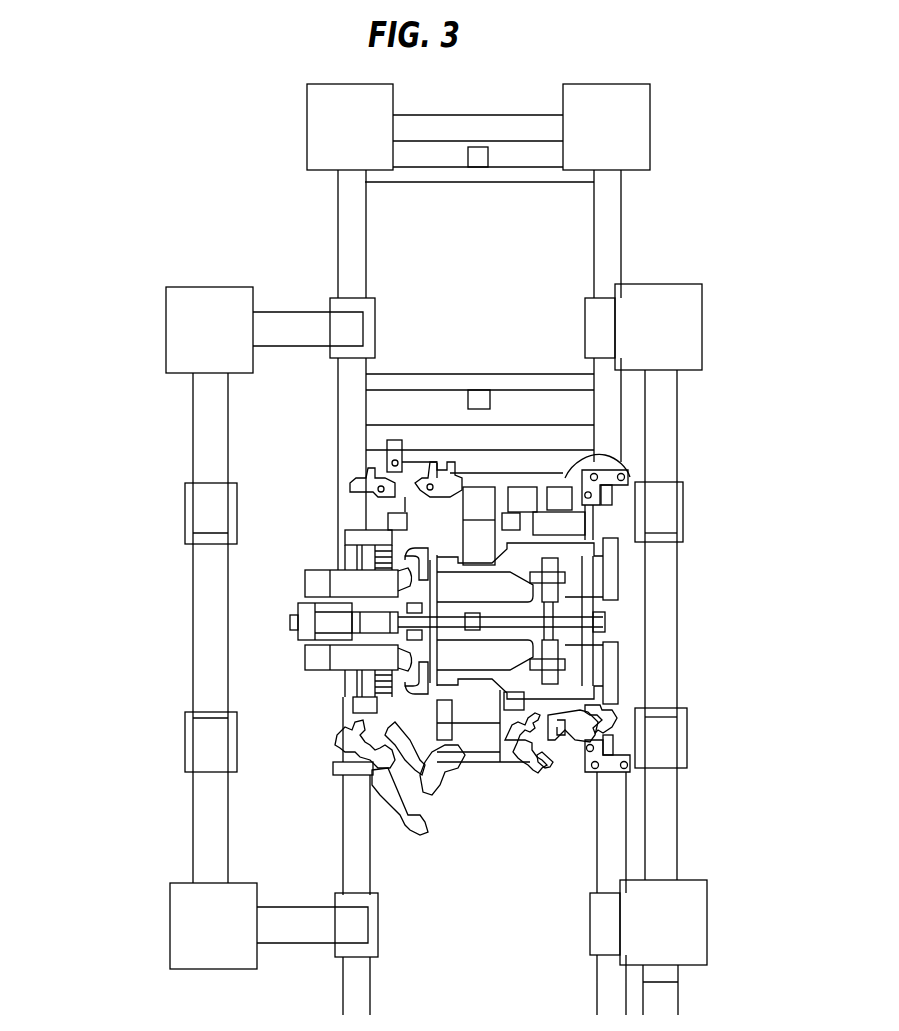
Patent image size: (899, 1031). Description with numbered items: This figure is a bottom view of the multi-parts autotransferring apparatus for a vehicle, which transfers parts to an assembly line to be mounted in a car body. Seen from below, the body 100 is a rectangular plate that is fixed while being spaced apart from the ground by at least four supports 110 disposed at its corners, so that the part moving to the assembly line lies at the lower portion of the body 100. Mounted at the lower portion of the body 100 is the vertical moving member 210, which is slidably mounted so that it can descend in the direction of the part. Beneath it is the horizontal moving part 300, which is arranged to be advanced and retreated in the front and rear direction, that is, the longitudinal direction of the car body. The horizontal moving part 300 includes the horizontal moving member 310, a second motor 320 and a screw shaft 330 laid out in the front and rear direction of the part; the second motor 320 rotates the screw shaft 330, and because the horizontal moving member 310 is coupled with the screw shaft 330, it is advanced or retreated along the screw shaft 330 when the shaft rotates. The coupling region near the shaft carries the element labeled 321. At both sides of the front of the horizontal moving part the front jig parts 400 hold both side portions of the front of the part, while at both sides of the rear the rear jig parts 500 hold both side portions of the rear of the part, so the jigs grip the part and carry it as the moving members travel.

The body 100 is at (608, 497).
The supports 110 is at (693, 326).
The vertical moving member 210 is at (612, 459).
The horizontal moving part 300 is at (315, 637).
The horizontal moving member 310 is at (397, 552).
The second motor 320 is at (307, 620).
The connecting member 321 is at (575, 622).
The screw shaft 330 is at (355, 650).
The front jig parts 400 is at (620, 705).
The rear jig parts 500 is at (417, 845).